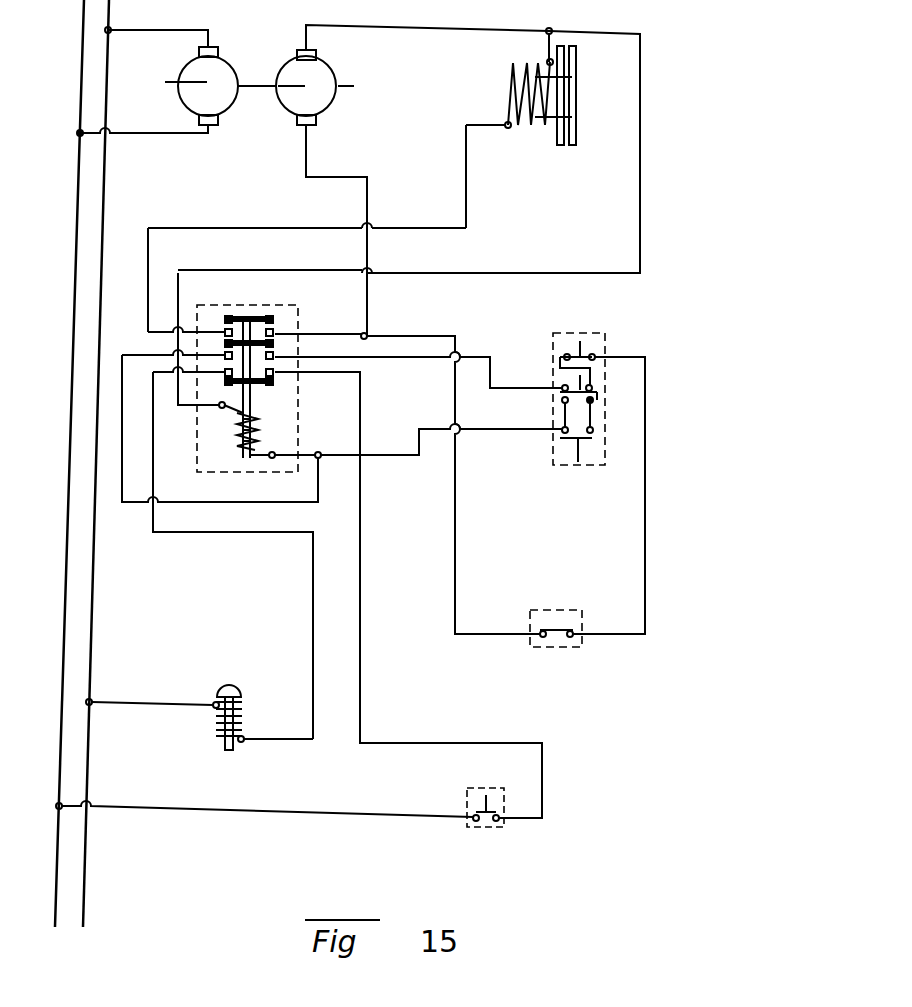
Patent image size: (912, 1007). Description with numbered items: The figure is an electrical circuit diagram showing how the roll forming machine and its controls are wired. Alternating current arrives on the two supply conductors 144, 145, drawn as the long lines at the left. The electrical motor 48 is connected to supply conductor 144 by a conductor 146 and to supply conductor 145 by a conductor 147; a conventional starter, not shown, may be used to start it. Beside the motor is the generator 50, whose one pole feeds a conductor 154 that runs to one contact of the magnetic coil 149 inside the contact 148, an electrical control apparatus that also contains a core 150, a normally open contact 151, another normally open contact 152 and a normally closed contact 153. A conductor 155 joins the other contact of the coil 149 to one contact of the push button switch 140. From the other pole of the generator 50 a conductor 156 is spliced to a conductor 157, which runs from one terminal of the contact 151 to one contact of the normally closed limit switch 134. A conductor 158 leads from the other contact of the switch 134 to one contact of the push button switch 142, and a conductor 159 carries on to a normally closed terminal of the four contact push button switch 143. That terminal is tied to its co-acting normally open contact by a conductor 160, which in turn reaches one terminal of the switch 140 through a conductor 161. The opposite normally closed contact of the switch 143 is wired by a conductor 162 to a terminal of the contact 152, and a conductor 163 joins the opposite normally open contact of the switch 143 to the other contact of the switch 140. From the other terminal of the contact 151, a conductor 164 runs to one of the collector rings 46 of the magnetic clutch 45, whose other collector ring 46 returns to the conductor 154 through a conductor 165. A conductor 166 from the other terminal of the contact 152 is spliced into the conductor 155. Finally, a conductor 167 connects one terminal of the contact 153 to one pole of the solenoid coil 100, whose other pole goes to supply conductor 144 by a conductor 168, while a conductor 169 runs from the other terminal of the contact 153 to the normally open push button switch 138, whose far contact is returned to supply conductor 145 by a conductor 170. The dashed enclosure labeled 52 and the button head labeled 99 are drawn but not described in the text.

The magnetic clutch 45 is at (560, 150).
The collector ring 46 is at (547, 62).
The electrical motor 48 is at (183, 70).
The generator 50 is at (326, 72).
The relay 52 is at (605, 333).
The push button 99 is at (234, 684).
The solenoid coil 100 is at (243, 718).
The normally closed limit switch 134 is at (558, 608).
The normally open push button switch 138 is at (492, 830).
The push button switch 140 is at (570, 450).
The push button switch 142 is at (578, 340).
The four contact push button switch 143 is at (565, 383).
The conductor 144 is at (85, 843).
The conductor 145 is at (56, 902).
The conductor 146 is at (180, 28).
The conductor 147 is at (136, 138).
The contact 148 is at (298, 308).
The magnetic coil 149 is at (235, 445).
The core 150 is at (255, 406).
The normally open contact 151 is at (260, 316).
The normally open contact 152 is at (233, 316).
The normally closed contact 153 is at (276, 382).
The conductor 154 is at (443, 24).
The conductor 155 is at (301, 455).
The conductor 156 is at (367, 177).
The conductor 157 is at (351, 335).
The conductor 158 is at (645, 520).
The conductor 159 is at (557, 360).
The conductor 160 is at (598, 395).
The conductor 161 is at (592, 423).
The conductor 162 is at (445, 362).
The conductor 163 is at (562, 414).
The conductor 164 is at (216, 224).
The conductor 165 is at (548, 44).
The conductor 166 is at (146, 350).
The conductor 167 is at (272, 535).
The conductor 168 is at (160, 702).
The conductor 169 is at (360, 410).
The conductor 170 is at (304, 806).